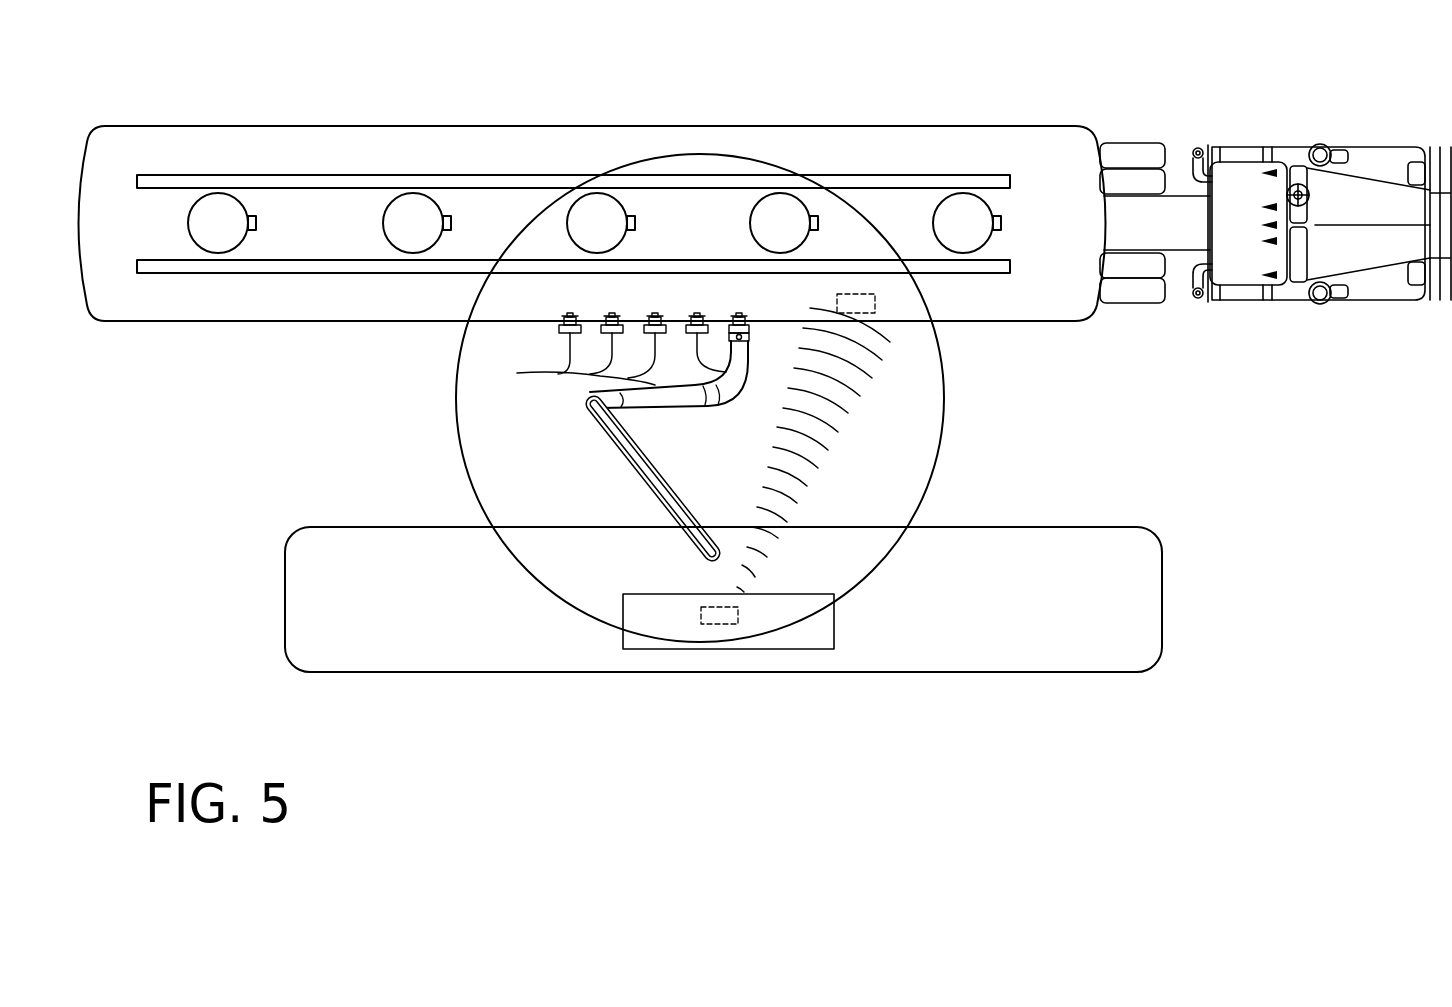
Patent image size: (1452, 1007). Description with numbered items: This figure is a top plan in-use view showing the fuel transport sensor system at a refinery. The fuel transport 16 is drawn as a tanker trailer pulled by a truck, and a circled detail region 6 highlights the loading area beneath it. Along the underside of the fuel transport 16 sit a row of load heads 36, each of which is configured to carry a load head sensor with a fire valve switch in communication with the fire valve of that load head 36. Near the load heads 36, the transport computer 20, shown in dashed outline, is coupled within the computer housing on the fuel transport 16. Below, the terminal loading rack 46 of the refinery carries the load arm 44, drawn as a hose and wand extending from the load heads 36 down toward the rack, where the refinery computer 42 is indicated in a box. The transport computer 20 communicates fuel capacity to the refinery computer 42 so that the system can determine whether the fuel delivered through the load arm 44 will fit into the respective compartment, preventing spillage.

The fuel transport 16 is at (972, 147).
The cleaning system 6 is at (548, 583).
The load heads 36 is at (560, 373).
The load arm 44 is at (658, 488).
The transport computer 20 is at (875, 303).
The terminal loading rack 46 is at (1047, 550).
The refinery computer 42 is at (718, 614).